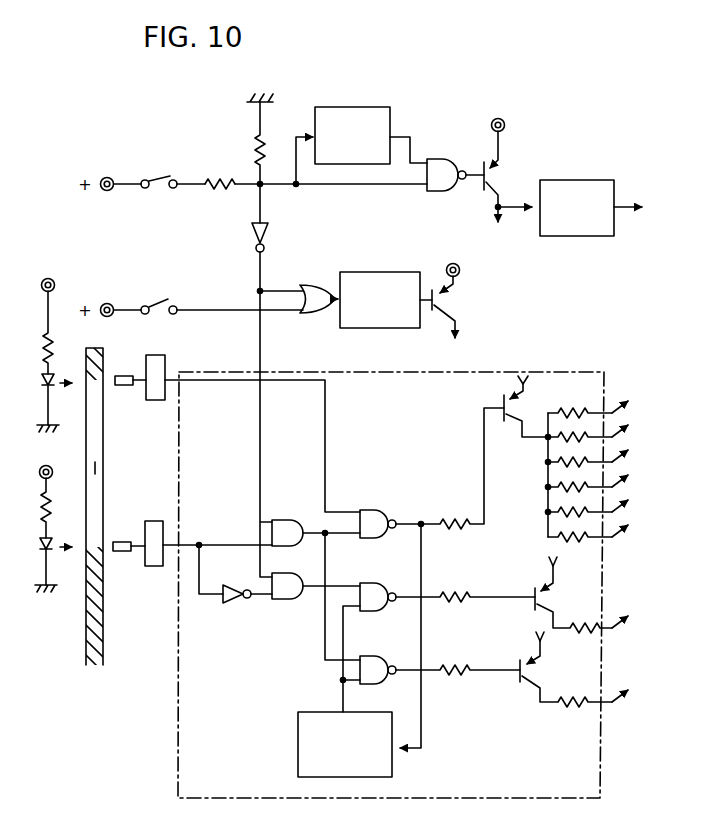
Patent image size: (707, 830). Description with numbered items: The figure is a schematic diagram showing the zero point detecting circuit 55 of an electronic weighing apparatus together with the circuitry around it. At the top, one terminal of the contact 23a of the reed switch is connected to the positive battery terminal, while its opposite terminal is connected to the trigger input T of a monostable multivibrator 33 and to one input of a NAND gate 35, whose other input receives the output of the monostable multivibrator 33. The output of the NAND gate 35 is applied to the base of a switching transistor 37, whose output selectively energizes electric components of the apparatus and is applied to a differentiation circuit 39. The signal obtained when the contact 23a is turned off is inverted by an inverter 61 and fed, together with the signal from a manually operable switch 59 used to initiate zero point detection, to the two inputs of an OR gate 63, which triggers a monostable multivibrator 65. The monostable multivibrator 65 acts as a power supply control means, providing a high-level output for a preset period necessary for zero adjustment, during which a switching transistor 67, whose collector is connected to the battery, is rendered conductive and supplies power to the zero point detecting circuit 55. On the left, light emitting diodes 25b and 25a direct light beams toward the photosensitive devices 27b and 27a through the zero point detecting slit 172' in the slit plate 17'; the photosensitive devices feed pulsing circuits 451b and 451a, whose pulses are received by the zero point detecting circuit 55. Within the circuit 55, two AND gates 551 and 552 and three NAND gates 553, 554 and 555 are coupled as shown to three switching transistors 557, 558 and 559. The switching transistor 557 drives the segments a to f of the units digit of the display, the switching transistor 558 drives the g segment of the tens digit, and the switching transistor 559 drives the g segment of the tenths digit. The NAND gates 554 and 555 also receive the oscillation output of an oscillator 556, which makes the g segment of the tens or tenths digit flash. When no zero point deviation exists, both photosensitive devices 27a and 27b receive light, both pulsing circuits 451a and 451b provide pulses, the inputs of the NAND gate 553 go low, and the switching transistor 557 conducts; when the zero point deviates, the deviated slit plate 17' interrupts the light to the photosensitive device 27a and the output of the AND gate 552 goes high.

The contact 23a is at (150, 177).
The monostable multivibrator 33 is at (365, 107).
The NAND gate 35 is at (440, 161).
The switching transistor 37 is at (483, 185).
The differentiation circuit 39 is at (567, 180).
The inverter 61 is at (256, 246).
The switch 59 is at (157, 299).
The OR gate 63 is at (313, 314).
The monostable multivibrator 65 is at (380, 329).
The switching transistor 67 is at (430, 312).
The light emitting diode 25b is at (50, 386).
The light emitting diode 25a is at (48, 550).
The slit plate 17' is at (72, 506).
The zero point detecting slit 172' is at (131, 471).
The photosensitive device 27b is at (122, 386).
The photosensitive device 27a is at (122, 552).
The pulsing circuit 451b is at (158, 401).
The pulsing circuit 451a is at (157, 567).
The zero point detecting circuit 55 is at (556, 378).
The AND gate 551 is at (283, 520).
The AND gate 552 is at (292, 600).
The NAND gate 553 is at (368, 510).
The NAND gate 554 is at (368, 583).
The NAND gate 555 is at (372, 656).
The oscillator 556 is at (298, 733).
The switching transistor 557 is at (504, 421).
The switching transistor 558 is at (533, 594).
The switching transistor 559 is at (517, 683).